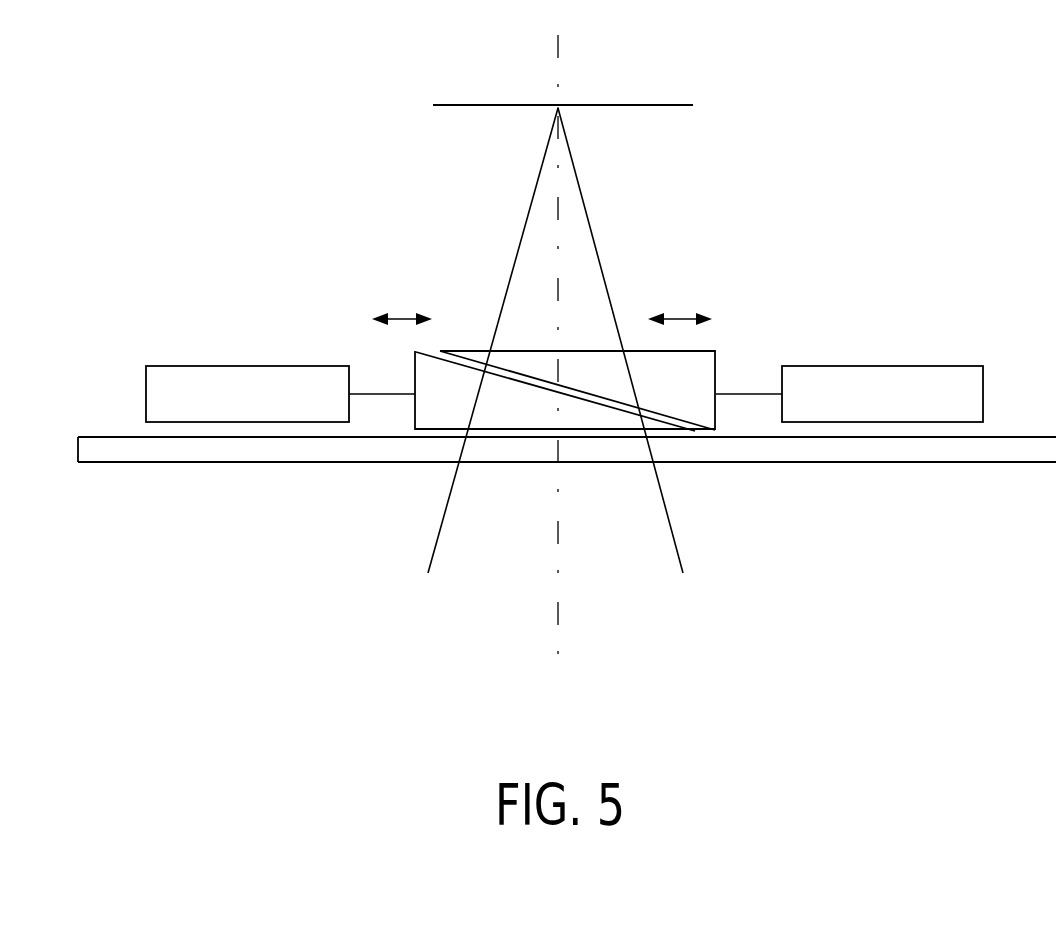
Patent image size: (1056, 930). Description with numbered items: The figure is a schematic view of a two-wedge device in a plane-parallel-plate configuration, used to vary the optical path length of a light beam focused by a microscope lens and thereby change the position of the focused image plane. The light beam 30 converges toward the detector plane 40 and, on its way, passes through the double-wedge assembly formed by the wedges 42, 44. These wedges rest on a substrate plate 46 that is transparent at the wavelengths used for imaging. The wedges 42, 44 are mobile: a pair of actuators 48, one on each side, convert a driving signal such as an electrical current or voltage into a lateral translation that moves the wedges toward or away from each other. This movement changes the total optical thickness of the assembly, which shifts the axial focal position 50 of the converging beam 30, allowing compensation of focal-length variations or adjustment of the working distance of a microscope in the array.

The light beam 30 is at (602, 262).
The detector plane 40 is at (632, 103).
The wedge 42 is at (447, 405).
The wedge 44 is at (677, 396).
The substrate plate 46 is at (772, 455).
The actuators 48 is at (273, 384).
The axial focal position 50 is at (555, 110).